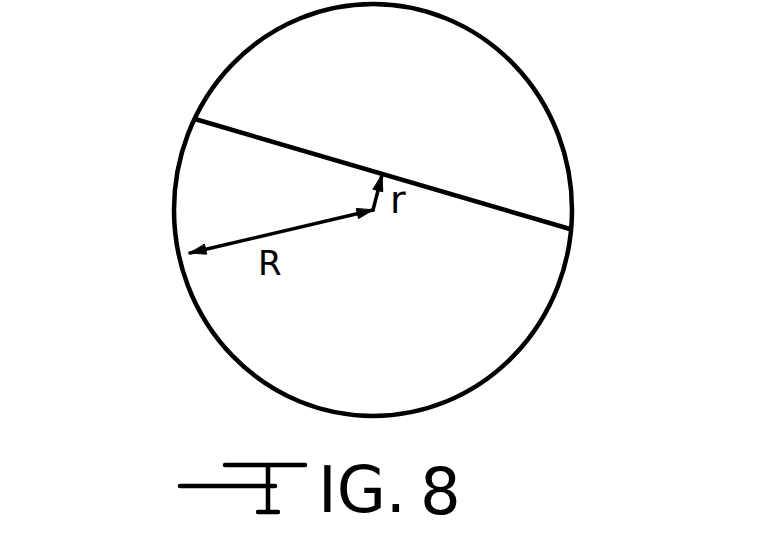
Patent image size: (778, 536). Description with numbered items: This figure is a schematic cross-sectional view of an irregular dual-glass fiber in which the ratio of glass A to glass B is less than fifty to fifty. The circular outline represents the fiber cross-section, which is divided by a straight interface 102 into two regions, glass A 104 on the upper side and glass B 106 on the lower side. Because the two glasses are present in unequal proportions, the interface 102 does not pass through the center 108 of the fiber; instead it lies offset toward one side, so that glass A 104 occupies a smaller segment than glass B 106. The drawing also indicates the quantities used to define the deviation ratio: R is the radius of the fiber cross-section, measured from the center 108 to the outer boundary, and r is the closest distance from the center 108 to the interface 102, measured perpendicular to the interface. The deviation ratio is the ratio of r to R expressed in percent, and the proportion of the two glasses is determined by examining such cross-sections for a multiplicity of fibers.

The interface 102 is at (503, 210).
The glass A 104 is at (420, 92).
The glass B 106 is at (465, 318).
The center 108 is at (371, 209).